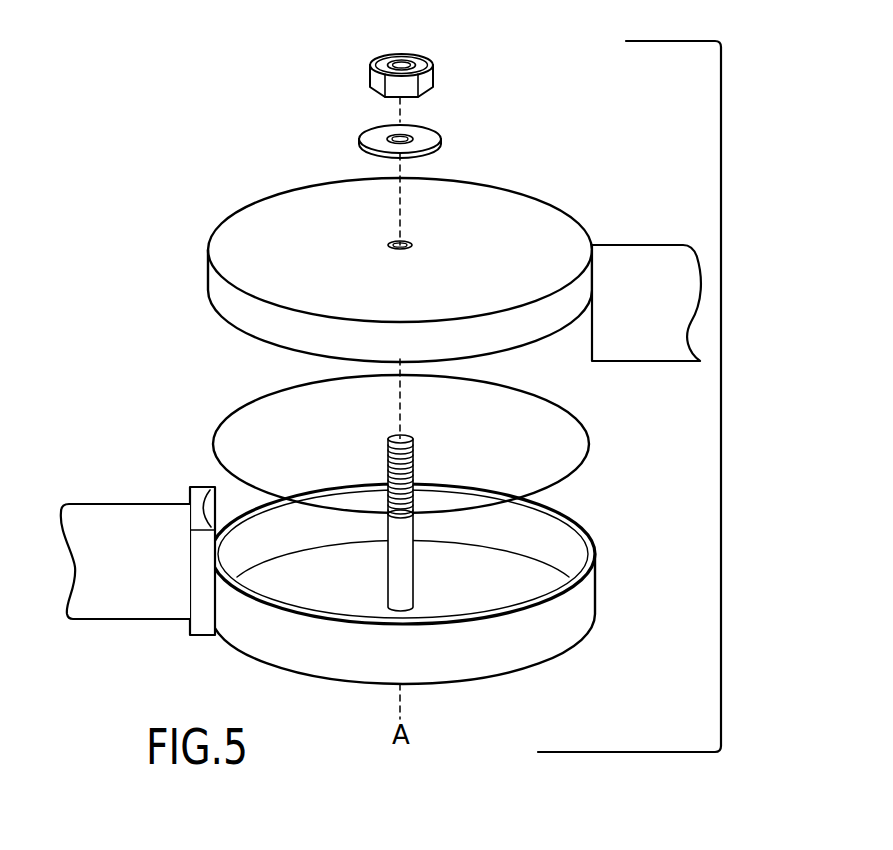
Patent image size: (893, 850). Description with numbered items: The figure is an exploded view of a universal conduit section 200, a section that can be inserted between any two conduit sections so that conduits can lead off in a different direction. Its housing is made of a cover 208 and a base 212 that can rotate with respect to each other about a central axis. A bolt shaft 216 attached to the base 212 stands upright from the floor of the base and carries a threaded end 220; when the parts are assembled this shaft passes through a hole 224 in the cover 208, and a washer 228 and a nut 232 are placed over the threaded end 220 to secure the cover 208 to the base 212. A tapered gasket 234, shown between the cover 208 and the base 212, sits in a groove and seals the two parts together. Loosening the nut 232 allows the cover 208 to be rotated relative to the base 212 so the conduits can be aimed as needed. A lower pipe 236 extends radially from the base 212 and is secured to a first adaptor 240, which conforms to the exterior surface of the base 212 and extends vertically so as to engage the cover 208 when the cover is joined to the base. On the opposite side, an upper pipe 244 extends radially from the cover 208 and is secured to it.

The universal conduit section 200 is at (718, 148).
The cover 208 is at (238, 207).
The base 212 is at (498, 672).
The bolt shaft 216 is at (400, 555).
The threaded end 220 is at (410, 452).
The hole 224 is at (409, 242).
The washer 228 is at (420, 151).
The nut 232 is at (426, 80).
The tapered gasket 234 is at (558, 388).
The lower pipe 236 is at (95, 502).
The first adaptor 240 is at (195, 595).
The upper pipe 244 is at (668, 243).